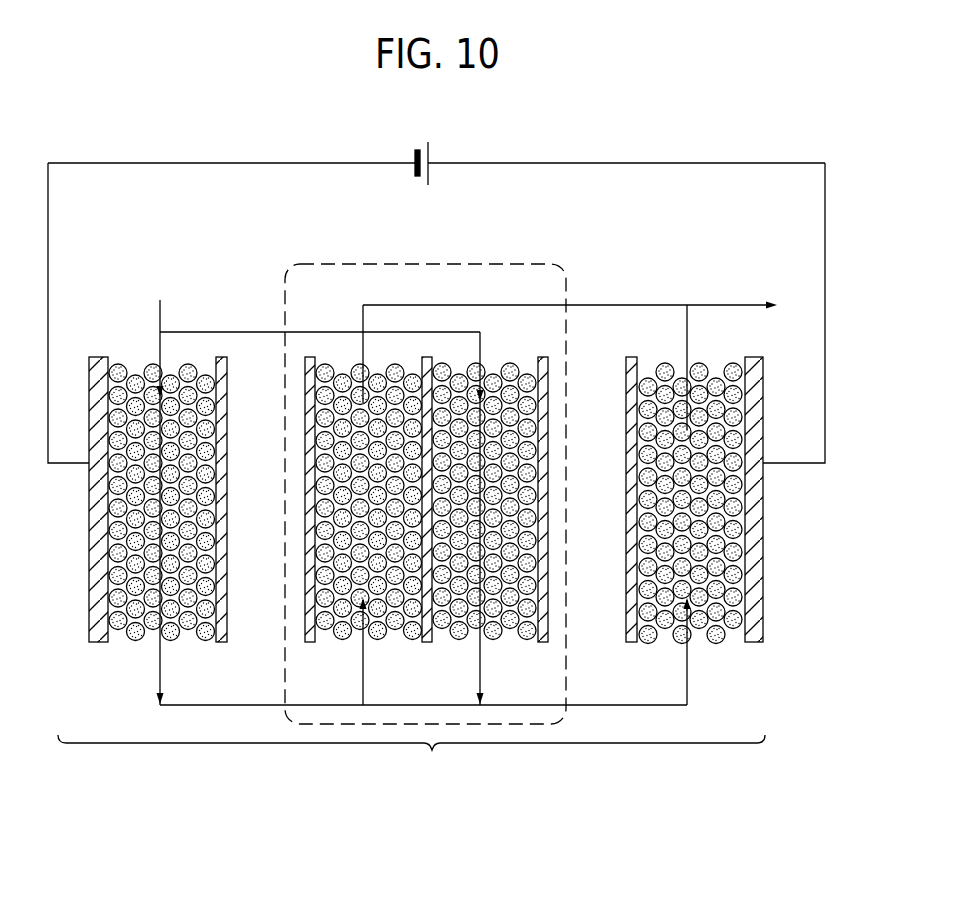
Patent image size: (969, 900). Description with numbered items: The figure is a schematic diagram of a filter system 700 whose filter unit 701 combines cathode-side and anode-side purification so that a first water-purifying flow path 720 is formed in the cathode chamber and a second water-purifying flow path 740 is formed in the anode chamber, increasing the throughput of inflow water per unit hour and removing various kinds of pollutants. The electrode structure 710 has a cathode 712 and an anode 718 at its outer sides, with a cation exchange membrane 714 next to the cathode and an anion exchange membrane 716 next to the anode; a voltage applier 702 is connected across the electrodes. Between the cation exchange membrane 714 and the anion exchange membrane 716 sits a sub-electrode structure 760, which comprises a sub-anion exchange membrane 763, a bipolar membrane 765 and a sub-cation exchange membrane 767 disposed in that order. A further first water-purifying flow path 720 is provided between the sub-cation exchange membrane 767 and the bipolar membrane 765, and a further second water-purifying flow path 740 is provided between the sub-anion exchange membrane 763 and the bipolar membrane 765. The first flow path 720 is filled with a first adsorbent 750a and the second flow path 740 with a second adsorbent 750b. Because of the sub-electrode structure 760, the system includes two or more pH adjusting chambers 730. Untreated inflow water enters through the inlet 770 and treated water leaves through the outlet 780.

The filter system 700 is at (378, 144).
The filter unit 701 is at (734, 511).
The voltage applier 702 is at (428, 183).
The electrode structure 710 is at (411, 761).
The cathode 712 is at (98, 626).
The cation exchange membrane 714 is at (223, 626).
The anion exchange membrane 716 is at (632, 640).
The anode 718 is at (758, 640).
The first water-purifying flow path 720 is at (148, 646).
The pH adjusting chamber 730 is at (265, 642).
The second water-purifying flow path 740 is at (337, 648).
The first adsorbent 750a is at (138, 368).
The second adsorbent 750b is at (712, 444).
The sub-electrode structure 760 is at (487, 264).
The sub-anion exchange membrane 763 is at (310, 355).
The bipolar membrane 765 is at (427, 355).
The sub-cation exchange membrane 767 is at (543, 355).
The inlet 770 is at (161, 306).
The outlet 780 is at (773, 302).